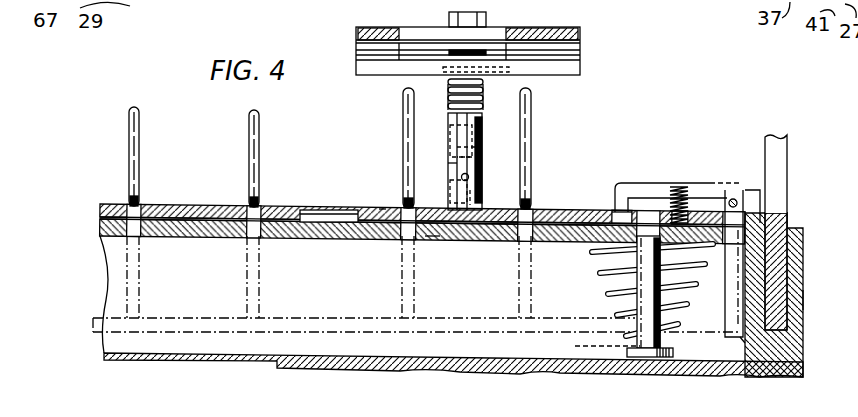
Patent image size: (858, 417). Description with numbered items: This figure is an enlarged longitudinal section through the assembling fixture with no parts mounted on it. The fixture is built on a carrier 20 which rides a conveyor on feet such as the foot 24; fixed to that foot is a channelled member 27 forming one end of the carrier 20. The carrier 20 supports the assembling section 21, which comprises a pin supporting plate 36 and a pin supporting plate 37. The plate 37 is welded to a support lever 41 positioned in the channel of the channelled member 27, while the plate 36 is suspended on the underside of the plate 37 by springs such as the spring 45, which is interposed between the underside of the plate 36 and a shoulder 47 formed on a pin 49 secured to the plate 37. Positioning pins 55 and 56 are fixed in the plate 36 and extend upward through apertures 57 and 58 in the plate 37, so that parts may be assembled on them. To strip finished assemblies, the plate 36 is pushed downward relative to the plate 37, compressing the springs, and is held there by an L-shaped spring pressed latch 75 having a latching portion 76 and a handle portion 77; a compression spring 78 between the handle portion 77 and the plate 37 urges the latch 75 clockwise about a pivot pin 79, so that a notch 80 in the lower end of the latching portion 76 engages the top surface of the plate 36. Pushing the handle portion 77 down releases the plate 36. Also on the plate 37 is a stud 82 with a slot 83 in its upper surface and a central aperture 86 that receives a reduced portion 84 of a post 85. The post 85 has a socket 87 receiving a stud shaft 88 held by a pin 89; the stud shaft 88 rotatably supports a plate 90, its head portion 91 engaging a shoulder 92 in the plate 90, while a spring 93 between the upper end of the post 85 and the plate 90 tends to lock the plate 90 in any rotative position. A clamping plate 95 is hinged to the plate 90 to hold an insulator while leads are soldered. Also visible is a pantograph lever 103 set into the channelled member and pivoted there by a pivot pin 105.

The carrier 20 is at (97, 212).
The assembling section 21 is at (291, 206).
The foot 24 is at (447, 347).
The channelled member 27 is at (795, 227).
The pin supporting plate 36 is at (370, 207).
The pin supporting plate 37 is at (381, 207).
The support lever 41 is at (777, 262).
The spring 45 is at (600, 275).
The shoulder 47 is at (613, 357).
The pin 49 is at (642, 310).
The positioning pins 55 is at (249, 115).
The positioning pins 56 is at (520, 115).
The apertures 57 is at (138, 205).
The apertures 58 is at (409, 207).
The spring pressed latch 75 is at (694, 182).
The latching portion 76 is at (730, 308).
The handle portion 77 is at (637, 187).
The compression spring 78 is at (674, 190).
The pivot pin 79 is at (734, 199).
The notch 80 is at (745, 343).
The stud 82 is at (480, 200).
The slot 83 is at (462, 177).
The reduced portion 84 is at (472, 200).
The post 85 is at (448, 163).
The central aperture 86 is at (433, 237).
The socket 87 is at (452, 140).
The stud shaft 88 is at (486, 150).
The pin 89 is at (486, 132).
The plate 90 is at (555, 77).
The head portion 91 is at (485, 91).
The shoulder 92 is at (448, 88).
The spring 93 is at (485, 105).
The clamping plate 95 is at (528, 36).
The lever 103 is at (777, 157).
The pivot pin 105 is at (803, 300).